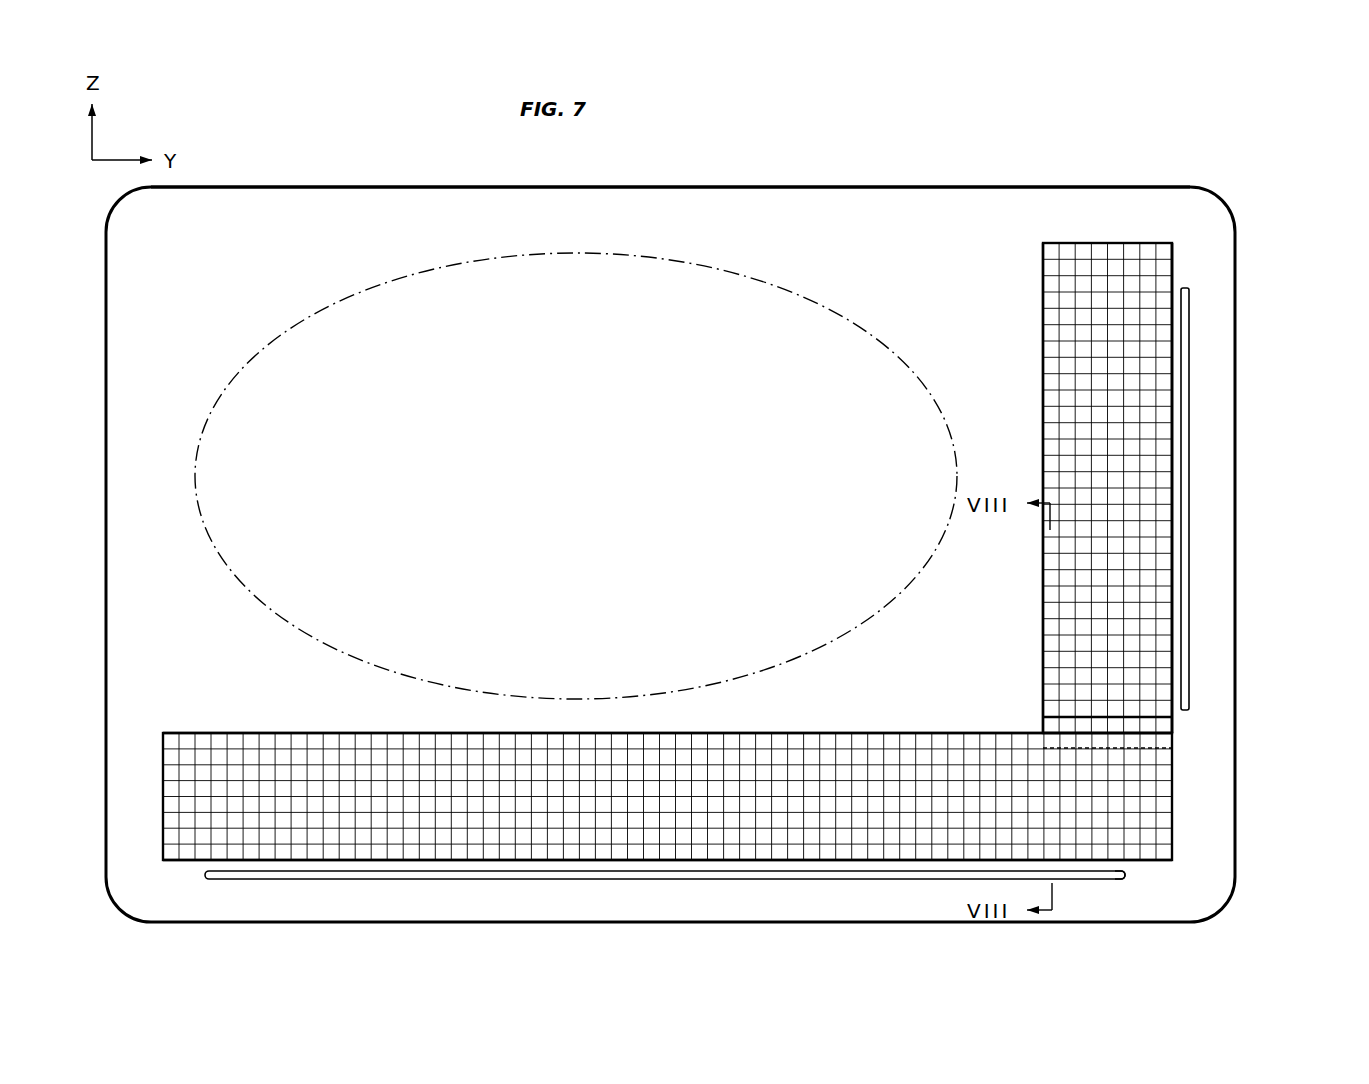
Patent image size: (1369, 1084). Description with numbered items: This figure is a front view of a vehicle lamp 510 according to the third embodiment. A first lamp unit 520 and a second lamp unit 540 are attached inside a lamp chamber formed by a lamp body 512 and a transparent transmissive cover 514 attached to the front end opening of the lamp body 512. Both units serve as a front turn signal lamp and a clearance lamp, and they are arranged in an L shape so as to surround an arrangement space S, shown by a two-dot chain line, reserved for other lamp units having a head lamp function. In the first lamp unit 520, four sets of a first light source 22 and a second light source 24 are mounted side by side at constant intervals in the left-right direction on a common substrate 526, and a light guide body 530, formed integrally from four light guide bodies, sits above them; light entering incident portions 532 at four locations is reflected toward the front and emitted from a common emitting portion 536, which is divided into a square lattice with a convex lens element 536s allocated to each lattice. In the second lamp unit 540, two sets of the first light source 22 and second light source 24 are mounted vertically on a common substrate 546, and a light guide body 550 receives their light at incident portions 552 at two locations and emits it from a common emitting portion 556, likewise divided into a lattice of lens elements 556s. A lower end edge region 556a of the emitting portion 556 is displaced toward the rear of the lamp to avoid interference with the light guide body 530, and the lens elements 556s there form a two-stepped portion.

The vehicle lamp 510 is at (447, 164).
The lamp body 512 is at (679, 134).
The transmissive cover 514 is at (1001, 186).
The arrangement space S is at (318, 308).
The first lamp unit 520 is at (654, 723).
The light guide body 530 is at (485, 723).
The incident portions 532 is at (789, 867).
The emitting portion 536 is at (667, 690).
The lens element 536s is at (607, 755).
The substrate 526 is at (1131, 878).
The second lamp unit 540 is at (1043, 483).
The substrate 546 is at (1187, 289).
The light guide body 550 is at (1071, 500).
The incident portions 552 is at (1178, 386).
The emitting portion 556 is at (1092, 500).
The lower end edge region 556a is at (1148, 724).
The lens element 556s is at (1045, 727).
The first light source 22 is at (674, 554).
The second light source 24 is at (1185, 378).